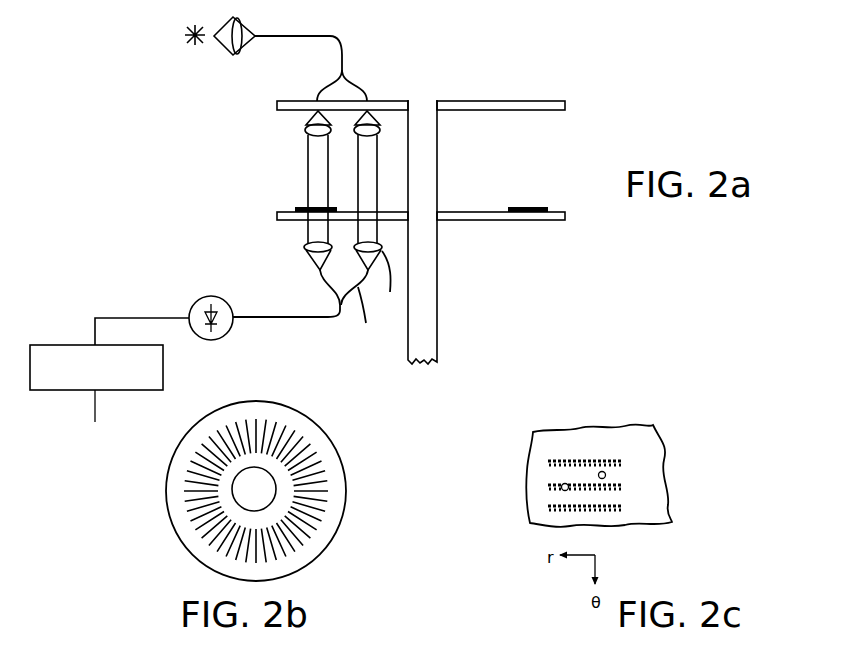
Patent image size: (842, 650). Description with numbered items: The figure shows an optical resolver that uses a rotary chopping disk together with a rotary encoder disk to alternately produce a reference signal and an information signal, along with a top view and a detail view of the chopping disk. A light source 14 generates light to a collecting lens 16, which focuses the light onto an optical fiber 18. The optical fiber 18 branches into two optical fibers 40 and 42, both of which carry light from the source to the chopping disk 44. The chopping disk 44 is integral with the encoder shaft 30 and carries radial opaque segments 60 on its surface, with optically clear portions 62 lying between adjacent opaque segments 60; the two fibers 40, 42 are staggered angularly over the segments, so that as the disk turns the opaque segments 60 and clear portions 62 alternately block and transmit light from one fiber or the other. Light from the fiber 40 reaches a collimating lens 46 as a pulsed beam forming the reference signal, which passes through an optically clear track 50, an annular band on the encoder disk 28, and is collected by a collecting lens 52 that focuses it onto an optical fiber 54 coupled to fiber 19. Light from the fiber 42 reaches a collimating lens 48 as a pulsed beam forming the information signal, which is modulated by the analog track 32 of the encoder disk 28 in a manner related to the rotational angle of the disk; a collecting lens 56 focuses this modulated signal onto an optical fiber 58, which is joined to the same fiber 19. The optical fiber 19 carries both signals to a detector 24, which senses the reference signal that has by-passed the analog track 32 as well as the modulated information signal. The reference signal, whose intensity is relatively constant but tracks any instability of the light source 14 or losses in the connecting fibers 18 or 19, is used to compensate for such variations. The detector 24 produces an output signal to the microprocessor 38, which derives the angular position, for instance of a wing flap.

In FIG. 2a, the light source 14 is at (189, 40).
In FIG. 2a, the collecting lens 16 is at (243, 48).
In FIG. 2a, the optical fiber 18 is at (316, 35).
In FIG. 2a, the optical fiber 19 is at (308, 320).
In FIG. 2a, the detector 24 is at (219, 339).
In FIG. 2a, the encoder disk 28 is at (477, 221).
In FIG. 2a, the encoder shaft 30 is at (433, 295).
In FIG. 2a, the analog track 32 is at (297, 207).
In FIG. 2a, the microprocessor 38 is at (60, 342).
In FIG. 2a, the optical fiber 40 is at (369, 94).
In FIG. 2c, the optical fiber 40 is at (607, 475).
In FIG. 2a, the optical fiber 42 is at (330, 86).
In FIG. 2c, the optical fiber 42 is at (561, 490).
In FIG. 2a, the chopping disk 44 is at (539, 93).
In FIG. 2b, the chopping disk 44 is at (342, 440).
In FIG. 2c, the chopping disk 44 is at (550, 423).
In FIG. 2a, the collimating lens 46 is at (378, 131).
In FIG. 2a, the collimating lens 48 is at (306, 131).
In FIG. 2a, the optically clear track 50 is at (383, 210).
In FIG. 2a, the collecting lens 52 is at (390, 287).
In FIG. 2a, the optical fiber 54 is at (373, 320).
In FIG. 2a, the collecting lens 56 is at (303, 249).
In FIG. 2a, the optical fiber 58 is at (325, 288).
In FIG. 2b, the opaque segments 60 is at (320, 478).
In FIG. 2c, the opaque segments 60 is at (633, 509).
In FIG. 2c, the optically clear portions 62 is at (548, 472).